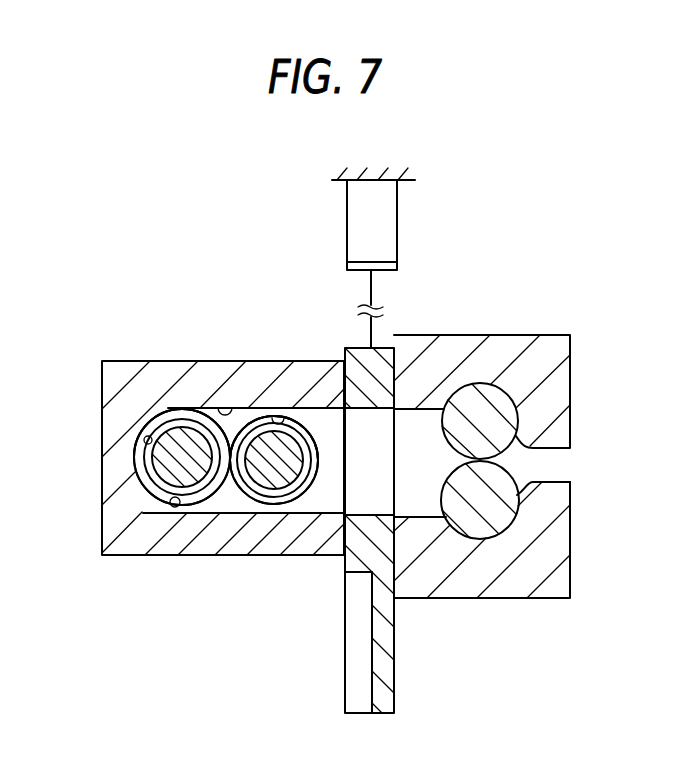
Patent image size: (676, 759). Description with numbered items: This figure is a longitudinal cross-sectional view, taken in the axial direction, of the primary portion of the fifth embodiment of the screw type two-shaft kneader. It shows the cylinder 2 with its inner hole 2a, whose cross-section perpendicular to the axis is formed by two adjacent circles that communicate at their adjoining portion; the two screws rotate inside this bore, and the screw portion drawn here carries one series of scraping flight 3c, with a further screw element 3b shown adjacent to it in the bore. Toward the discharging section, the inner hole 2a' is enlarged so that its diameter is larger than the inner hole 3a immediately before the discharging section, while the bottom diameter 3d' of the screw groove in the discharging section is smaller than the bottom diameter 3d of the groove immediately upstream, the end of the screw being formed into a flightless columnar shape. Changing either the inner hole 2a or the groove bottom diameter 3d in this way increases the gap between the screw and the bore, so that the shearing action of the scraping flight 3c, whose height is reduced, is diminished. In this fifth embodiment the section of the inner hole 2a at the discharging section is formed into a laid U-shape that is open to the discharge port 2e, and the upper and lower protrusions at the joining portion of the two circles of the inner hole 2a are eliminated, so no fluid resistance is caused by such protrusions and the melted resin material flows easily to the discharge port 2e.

The cylinder 2 is at (163, 362).
The inner hole 2a is at (177, 404).
The inner hole of the discharging section 2a' is at (190, 460).
The discharge port 2e is at (327, 487).
The inner hole immediately before the discharging section 3a is at (178, 487).
The second conductor core 3b is at (266, 490).
The scraping flight 3c is at (145, 458).
The bottom diameter of the groove 3d is at (175, 529).
The bottom diameter of the groove at the discharging section 3d' is at (236, 351).